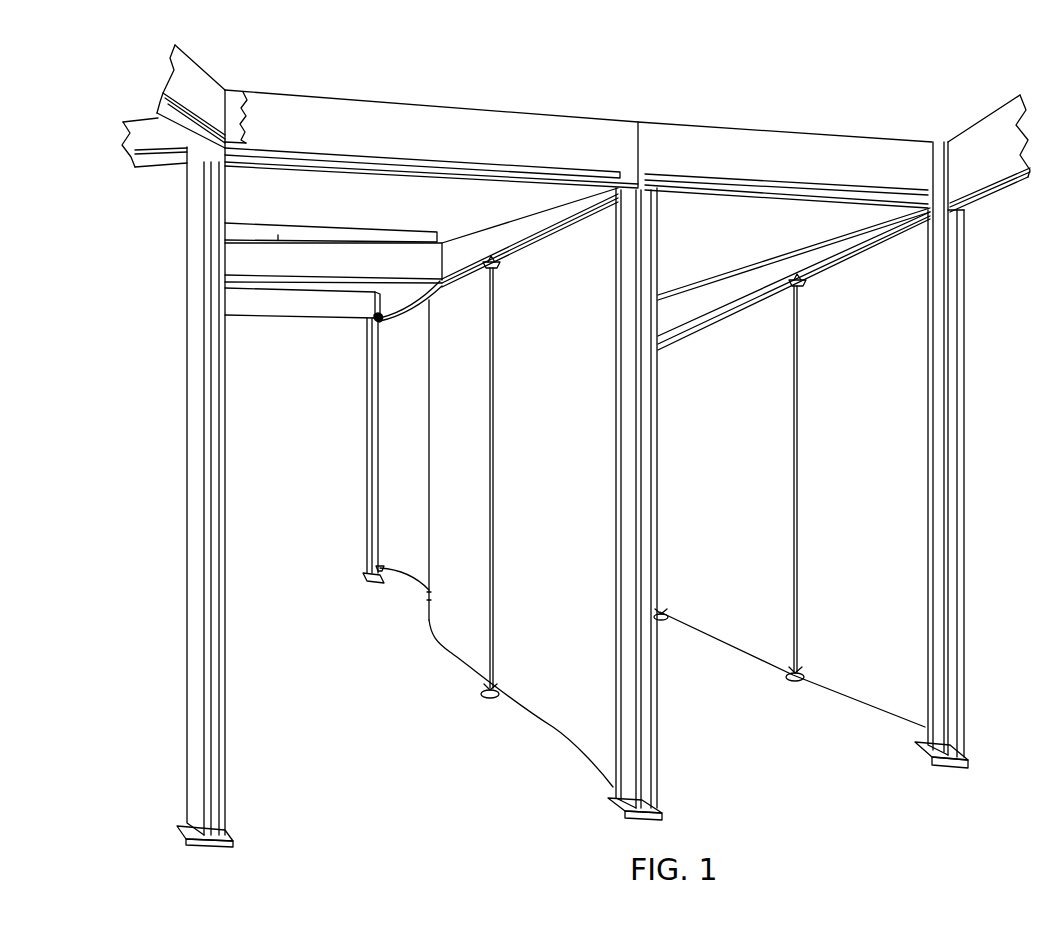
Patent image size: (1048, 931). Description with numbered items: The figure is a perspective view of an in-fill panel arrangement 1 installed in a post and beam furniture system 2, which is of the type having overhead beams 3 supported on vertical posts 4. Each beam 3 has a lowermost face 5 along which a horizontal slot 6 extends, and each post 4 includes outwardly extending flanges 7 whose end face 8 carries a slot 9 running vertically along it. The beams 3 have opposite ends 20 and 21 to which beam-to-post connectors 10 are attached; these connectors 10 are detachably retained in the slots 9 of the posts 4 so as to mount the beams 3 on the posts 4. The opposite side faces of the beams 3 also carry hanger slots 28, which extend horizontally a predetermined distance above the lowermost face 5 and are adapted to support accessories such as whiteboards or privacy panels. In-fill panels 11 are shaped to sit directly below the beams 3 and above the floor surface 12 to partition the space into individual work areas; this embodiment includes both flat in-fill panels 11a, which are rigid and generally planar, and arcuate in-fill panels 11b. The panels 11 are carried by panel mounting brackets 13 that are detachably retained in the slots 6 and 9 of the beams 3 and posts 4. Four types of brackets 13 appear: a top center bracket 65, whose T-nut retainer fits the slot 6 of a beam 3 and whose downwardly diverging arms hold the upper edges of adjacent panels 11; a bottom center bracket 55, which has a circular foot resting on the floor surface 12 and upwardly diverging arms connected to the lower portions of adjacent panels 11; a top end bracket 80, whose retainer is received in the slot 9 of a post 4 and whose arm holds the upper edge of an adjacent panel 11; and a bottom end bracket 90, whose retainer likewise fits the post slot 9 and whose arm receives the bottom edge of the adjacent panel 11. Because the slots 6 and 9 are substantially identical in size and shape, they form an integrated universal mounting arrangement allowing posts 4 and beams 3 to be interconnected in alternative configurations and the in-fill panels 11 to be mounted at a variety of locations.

The in-fill panel arrangement 1 is at (438, 669).
The post and beam furniture system 2 is at (986, 220).
The overhead beam 3 is at (136, 118).
The vertical post 4 is at (368, 440).
The lowermost face 5 is at (765, 200).
The horizontal slot 6 is at (372, 178).
The flange 7 is at (200, 440).
The end face 8 is at (605, 540).
The slot 9 is at (616, 638).
The beam-to-post connector 10 is at (243, 113).
The in-fill panel 11 is at (728, 443).
The flat in-fill panel 11a is at (705, 612).
The arcuate in-fill panel 11b is at (430, 630).
The floor surface 12 is at (760, 738).
The panel mounting bracket 13 is at (499, 268).
The beam end 20 is at (230, 152).
The beam end 21 is at (637, 122).
The hanger slot 28 is at (533, 150).
The bottom center bracket 55 is at (483, 692).
The top center bracket 65 is at (488, 270).
The top end bracket 80 is at (381, 323).
The bottom end bracket 90 is at (365, 553).